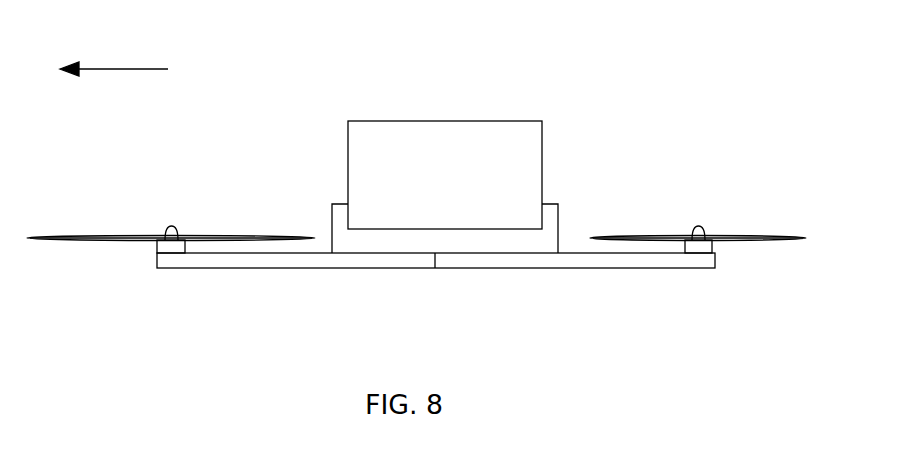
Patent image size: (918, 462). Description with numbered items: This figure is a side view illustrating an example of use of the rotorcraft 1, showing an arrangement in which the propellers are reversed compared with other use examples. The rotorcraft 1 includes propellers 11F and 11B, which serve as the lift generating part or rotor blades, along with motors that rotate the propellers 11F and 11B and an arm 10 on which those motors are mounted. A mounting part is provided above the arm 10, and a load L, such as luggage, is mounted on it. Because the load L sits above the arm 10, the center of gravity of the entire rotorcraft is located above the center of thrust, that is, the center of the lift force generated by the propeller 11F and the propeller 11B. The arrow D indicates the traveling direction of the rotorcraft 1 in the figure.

The rotorcraft 1 is at (565, 110).
The arm 10 is at (316, 270).
The propeller 11B is at (176, 230).
The propeller 11F is at (702, 230).
The load L is at (398, 147).
The arrow D is at (114, 48).